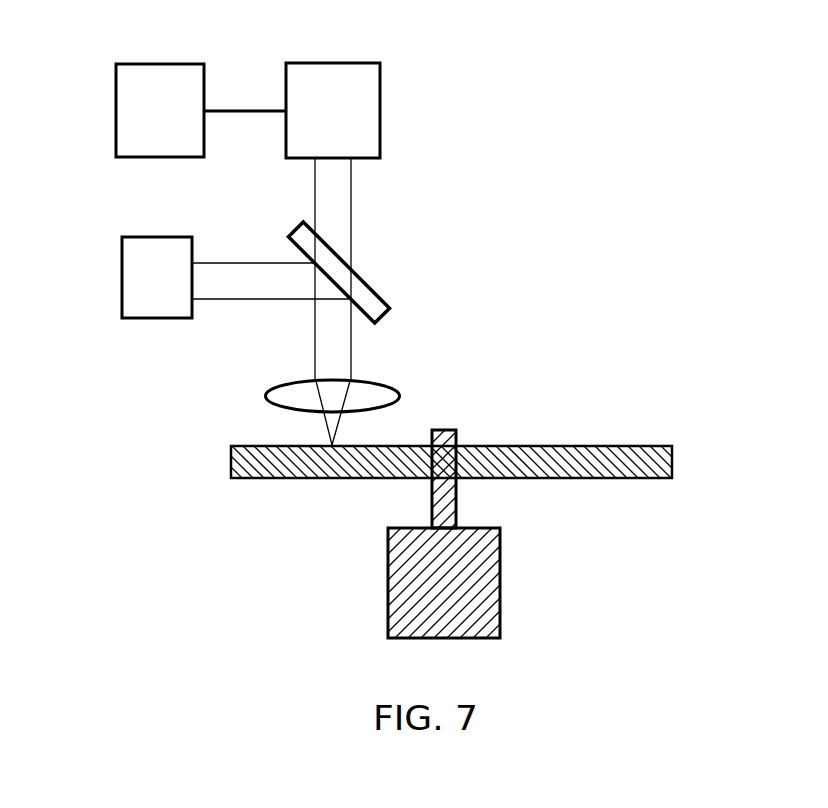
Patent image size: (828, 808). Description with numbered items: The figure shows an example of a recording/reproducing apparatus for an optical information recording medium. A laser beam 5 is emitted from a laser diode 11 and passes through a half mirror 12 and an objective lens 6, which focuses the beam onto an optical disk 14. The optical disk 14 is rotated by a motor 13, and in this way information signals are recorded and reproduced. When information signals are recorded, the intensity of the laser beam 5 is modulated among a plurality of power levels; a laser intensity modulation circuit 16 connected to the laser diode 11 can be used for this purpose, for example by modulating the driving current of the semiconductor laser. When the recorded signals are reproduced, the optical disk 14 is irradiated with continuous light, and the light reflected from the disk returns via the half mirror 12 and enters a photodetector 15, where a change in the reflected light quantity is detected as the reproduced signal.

The laser beam 5 is at (351, 195).
The objective lens 6 is at (395, 385).
The laser diode 11 is at (380, 110).
The half mirror 12 is at (380, 292).
The motor 13 is at (500, 580).
The optical disk 14 is at (618, 446).
The photodetector 15 is at (138, 318).
The laser intensity modulation circuit 16 is at (132, 157).